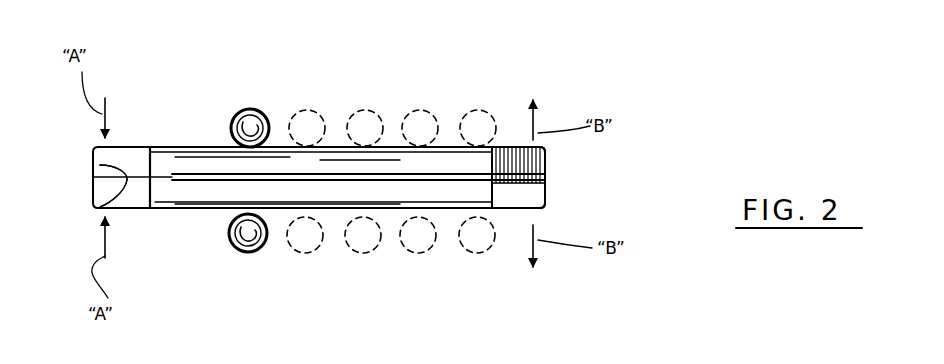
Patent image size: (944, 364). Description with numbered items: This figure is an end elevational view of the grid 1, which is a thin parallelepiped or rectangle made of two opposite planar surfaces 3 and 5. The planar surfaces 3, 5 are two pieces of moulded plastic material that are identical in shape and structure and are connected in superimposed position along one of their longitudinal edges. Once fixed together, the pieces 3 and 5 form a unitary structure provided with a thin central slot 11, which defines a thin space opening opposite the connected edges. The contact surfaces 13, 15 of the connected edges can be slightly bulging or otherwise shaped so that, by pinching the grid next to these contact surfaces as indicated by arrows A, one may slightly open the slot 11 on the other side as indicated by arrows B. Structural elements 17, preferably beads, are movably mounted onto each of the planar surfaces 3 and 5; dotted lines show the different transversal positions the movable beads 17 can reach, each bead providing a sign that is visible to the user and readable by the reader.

The grid 1 is at (522, 84).
The planar surface 3 is at (186, 146).
The planar surface 5 is at (187, 210).
The central slot 11 is at (548, 186).
The contact surface 13 is at (98, 208).
The contact surface 15 is at (96, 164).
The structural element 17 is at (255, 108).